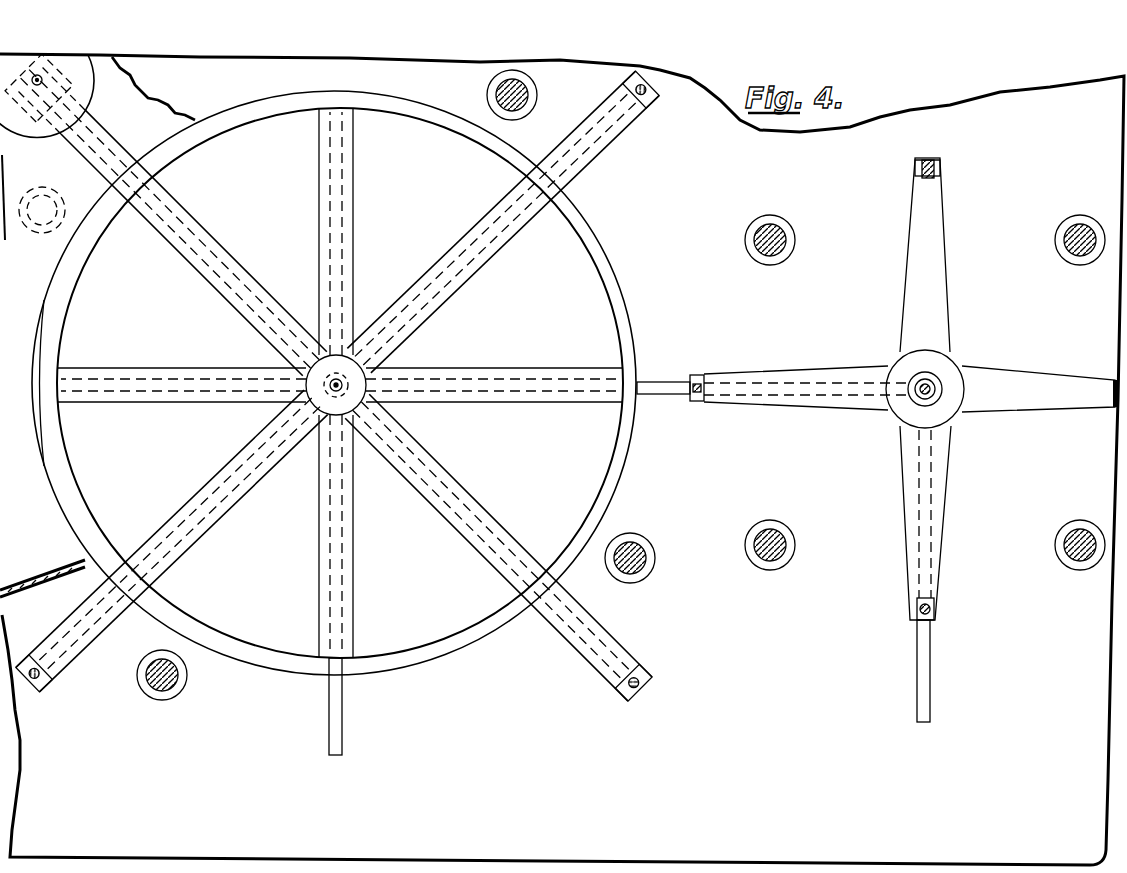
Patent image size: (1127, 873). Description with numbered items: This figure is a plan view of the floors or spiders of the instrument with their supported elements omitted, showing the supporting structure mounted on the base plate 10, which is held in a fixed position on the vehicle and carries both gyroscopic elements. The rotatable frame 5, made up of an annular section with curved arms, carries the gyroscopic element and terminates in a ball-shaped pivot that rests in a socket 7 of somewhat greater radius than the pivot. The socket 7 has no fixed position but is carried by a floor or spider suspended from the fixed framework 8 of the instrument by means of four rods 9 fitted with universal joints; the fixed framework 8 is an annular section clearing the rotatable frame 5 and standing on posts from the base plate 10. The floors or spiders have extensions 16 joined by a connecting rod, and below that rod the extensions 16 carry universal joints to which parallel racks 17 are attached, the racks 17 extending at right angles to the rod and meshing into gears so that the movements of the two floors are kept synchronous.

The base plate 10 is at (562, 459).
The rotatable frame 5 is at (598, 238).
The socket 7 is at (622, 143).
The rods 9 is at (35, 695).
The extensions 16 is at (680, 370).
The racks 17 is at (343, 713).
The fixed framework 8 is at (42, 554).